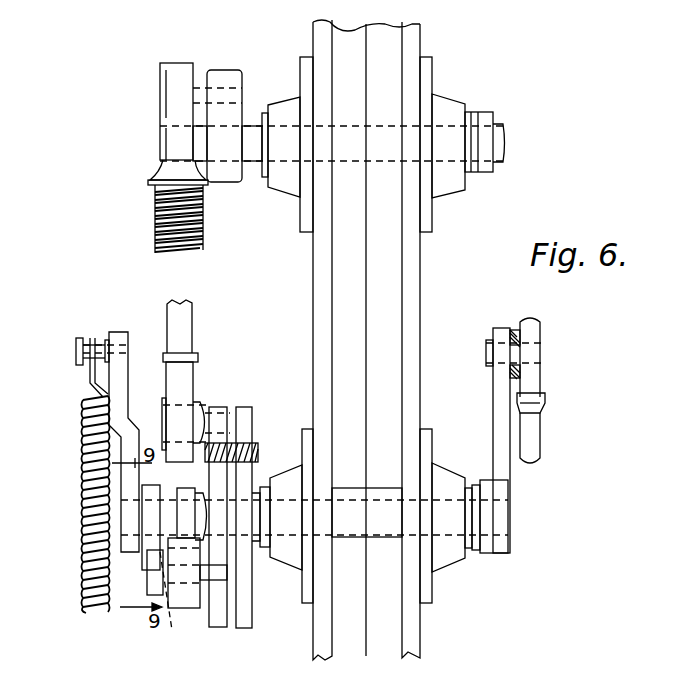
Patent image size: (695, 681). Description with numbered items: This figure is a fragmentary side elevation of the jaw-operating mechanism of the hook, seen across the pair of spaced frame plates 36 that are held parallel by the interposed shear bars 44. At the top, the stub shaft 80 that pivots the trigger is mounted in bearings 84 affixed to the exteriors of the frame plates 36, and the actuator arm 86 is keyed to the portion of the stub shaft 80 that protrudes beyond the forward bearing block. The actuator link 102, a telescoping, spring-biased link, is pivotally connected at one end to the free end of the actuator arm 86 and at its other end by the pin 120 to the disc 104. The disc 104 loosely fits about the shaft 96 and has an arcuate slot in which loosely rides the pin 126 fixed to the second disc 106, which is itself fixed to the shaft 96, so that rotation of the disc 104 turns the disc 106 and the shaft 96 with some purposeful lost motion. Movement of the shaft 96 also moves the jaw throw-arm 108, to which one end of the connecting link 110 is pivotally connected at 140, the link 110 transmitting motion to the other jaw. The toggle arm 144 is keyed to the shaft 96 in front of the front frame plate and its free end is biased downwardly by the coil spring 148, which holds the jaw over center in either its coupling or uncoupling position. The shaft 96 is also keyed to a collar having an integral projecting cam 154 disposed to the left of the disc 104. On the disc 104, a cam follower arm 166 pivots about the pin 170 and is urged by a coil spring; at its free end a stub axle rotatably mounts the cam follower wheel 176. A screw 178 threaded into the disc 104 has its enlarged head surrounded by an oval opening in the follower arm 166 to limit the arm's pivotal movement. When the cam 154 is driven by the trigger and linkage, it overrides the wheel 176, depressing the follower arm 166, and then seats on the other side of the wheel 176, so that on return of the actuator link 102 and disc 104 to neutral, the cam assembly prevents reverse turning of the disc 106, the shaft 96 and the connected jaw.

The frame plates 36 is at (313, 262).
The shear bars 44 is at (332, 344).
The stub shaft 80 is at (505, 147).
The bearings 84 is at (293, 97).
The actuator arm 86 is at (243, 178).
The shaft 96 is at (388, 537).
The actuator link 102 is at (150, 252).
The disc 104 is at (228, 628).
The disc 106 is at (253, 628).
The jaw throw-arm 108 is at (510, 472).
The connecting link 110 is at (550, 440).
The pin 120 is at (200, 410).
The pin 126 is at (255, 448).
The pivotal connection 140 is at (488, 355).
The toggle arm 144 is at (118, 332).
The spring 148 is at (85, 572).
The cam 154 is at (145, 575).
The cam follower arm 166 is at (183, 610).
The pin 170 is at (172, 622).
The cam follower wheel 176 is at (147, 597).
The screw 178 is at (205, 582).